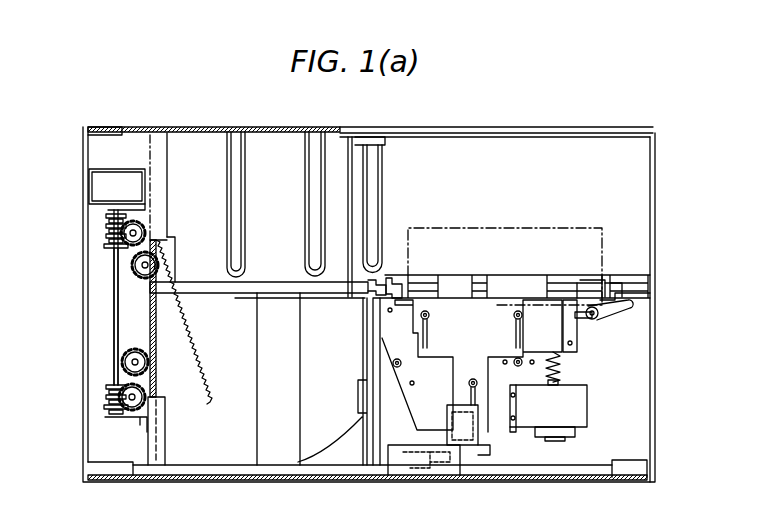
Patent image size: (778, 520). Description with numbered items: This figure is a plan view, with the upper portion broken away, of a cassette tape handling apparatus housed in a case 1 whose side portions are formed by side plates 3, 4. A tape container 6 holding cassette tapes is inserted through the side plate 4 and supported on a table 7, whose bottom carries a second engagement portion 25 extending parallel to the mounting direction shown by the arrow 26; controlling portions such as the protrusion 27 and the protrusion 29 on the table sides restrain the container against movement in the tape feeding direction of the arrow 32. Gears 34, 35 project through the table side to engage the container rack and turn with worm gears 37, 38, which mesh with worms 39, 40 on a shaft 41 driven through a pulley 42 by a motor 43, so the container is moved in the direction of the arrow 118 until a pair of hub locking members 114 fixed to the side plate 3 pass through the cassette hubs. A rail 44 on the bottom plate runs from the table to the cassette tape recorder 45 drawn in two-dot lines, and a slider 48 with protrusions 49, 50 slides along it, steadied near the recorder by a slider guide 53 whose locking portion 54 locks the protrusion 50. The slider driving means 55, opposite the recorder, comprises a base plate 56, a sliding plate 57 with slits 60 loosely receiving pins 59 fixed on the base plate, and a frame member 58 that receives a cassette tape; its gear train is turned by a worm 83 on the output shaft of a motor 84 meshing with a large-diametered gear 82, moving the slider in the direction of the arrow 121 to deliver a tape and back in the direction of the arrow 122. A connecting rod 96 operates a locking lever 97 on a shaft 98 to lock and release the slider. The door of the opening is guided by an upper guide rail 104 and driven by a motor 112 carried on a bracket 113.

The case 1 is at (80, 316).
The side plate 3 is at (217, 128).
The side plate 4 is at (200, 476).
The tape container 6 is at (253, 468).
The table 7 is at (273, 165).
The second engagement portion 25 is at (360, 158).
The arrow 26 is at (272, 488).
The controlling portion 27 is at (163, 392).
The controlling portion 29 is at (375, 440).
The arrow 32 is at (250, 288).
The gear 34 is at (133, 268).
The gear 35 is at (125, 370).
The worm gear 37 is at (120, 258).
The worm gear 38 is at (110, 424).
The worm 39 is at (112, 235).
The worm 40 is at (110, 394).
The shaft 41 is at (117, 344).
The pulley 42 is at (110, 222).
The motor 43 is at (97, 185).
The rail 44 is at (635, 277).
The cassette tape recorder 45 is at (530, 228).
The slider 48 is at (204, 283).
The protrusion 49 is at (165, 283).
The protrusion 50 is at (388, 283).
The slider guide 53 is at (594, 275).
The locking portion 54 is at (605, 284).
The slider driving means 55 is at (387, 467).
The base plate 56 is at (495, 450).
The sliding plate 57 is at (496, 426).
The frame member 58 is at (523, 277).
The pin 59 is at (430, 315).
The slit 60 is at (429, 340).
The large-diametered gear 82 is at (545, 365).
The worm 83 is at (556, 382).
The motor 84 is at (588, 400).
The connecting rod 96 is at (578, 318).
The locking lever 97 is at (633, 312).
The shaft 98 is at (600, 318).
The upper guide rail 104 is at (232, 468).
The motor 112 is at (457, 441).
The bracket 113 is at (433, 467).
The hub locking member 114 is at (249, 156).
The arrow 118 is at (190, 397).
The arrow 121 is at (420, 255).
The arrow 122 is at (426, 245).